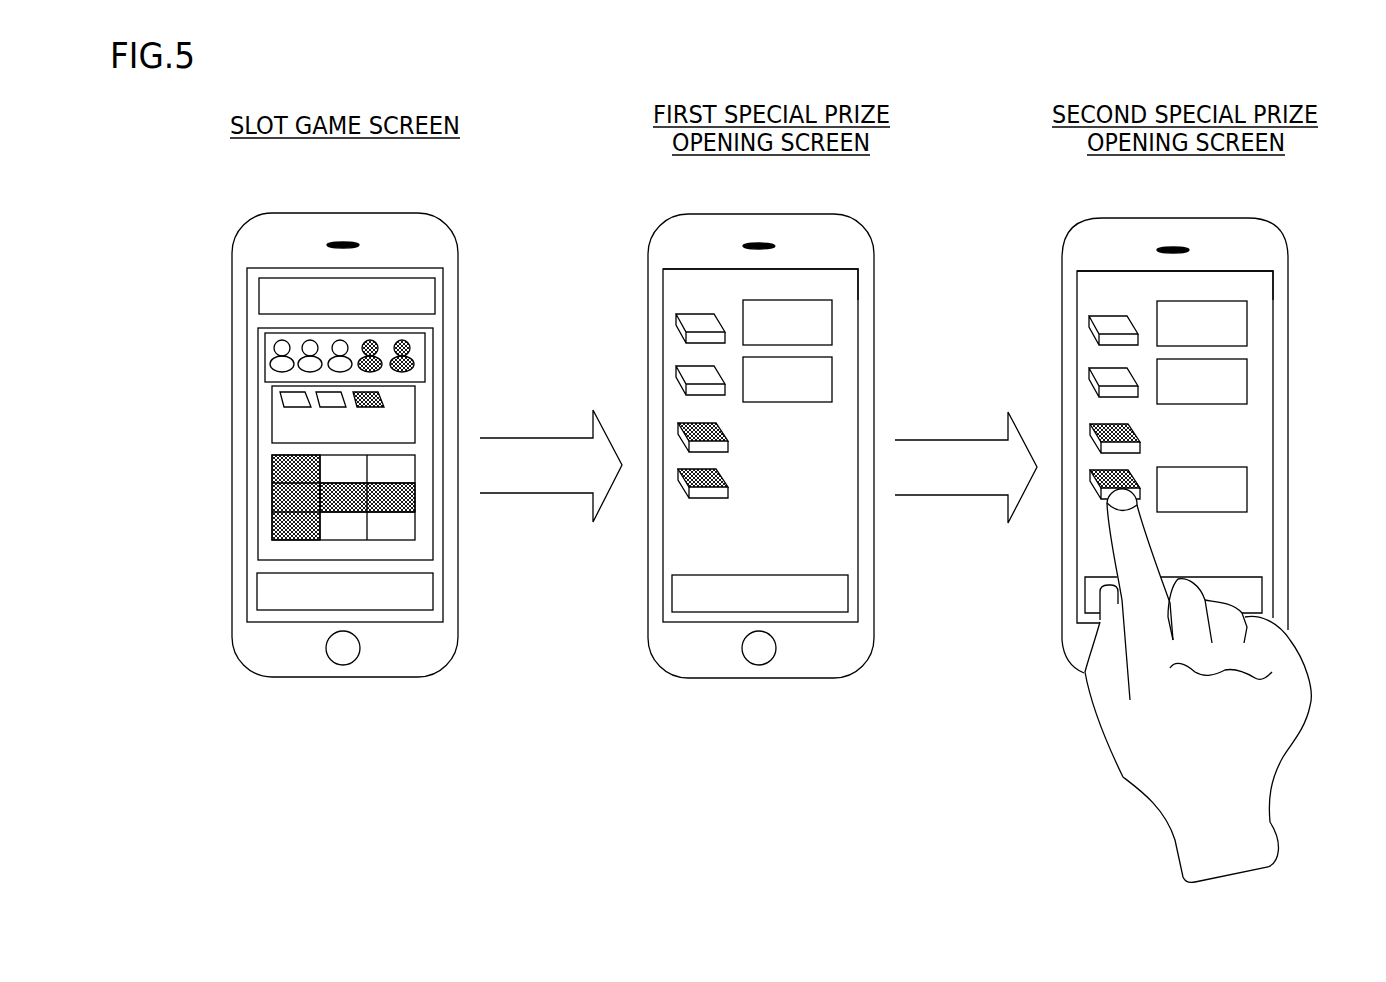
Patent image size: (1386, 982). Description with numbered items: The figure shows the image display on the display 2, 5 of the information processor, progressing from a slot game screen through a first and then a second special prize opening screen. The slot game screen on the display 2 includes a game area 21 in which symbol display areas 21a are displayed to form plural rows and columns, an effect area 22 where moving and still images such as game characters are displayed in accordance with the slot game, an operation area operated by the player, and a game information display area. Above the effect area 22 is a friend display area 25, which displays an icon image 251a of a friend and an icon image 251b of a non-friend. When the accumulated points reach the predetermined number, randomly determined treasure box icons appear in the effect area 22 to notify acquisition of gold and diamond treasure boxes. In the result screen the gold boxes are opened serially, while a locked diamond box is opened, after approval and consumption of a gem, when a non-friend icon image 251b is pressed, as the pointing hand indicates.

The display 2 is at (390, 428).
The slot game area 5 is at (432, 330).
The game area 21 is at (266, 457).
The symbol display areas 21a is at (277, 528).
The effect area 22 is at (271, 392).
The friend display area 25 is at (265, 342).
The icon image of a friend 251a is at (276, 353).
The icon image of a non-friend 251b is at (413, 352).